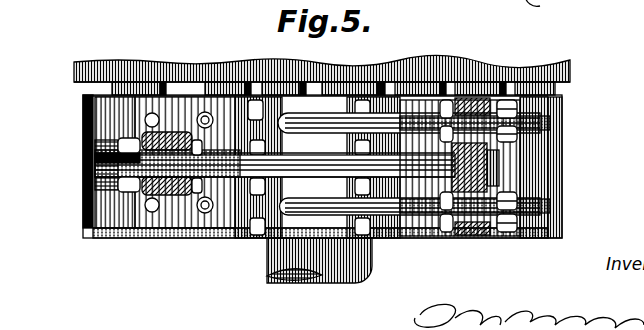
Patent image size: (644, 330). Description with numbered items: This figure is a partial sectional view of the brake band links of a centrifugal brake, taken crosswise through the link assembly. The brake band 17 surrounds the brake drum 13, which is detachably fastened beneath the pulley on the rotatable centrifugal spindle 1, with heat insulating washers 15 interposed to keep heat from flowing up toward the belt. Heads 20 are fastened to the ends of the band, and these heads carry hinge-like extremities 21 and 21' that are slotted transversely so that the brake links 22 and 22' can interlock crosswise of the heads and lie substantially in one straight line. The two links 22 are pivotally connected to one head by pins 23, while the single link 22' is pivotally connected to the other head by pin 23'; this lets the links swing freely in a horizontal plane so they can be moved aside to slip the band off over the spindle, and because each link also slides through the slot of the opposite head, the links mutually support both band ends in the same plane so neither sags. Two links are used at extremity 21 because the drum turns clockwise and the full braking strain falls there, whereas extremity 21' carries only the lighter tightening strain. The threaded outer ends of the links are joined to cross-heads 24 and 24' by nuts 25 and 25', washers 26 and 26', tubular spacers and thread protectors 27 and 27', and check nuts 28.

The centrifugal spindle 1 is at (305, 268).
The brake drum 13 is at (320, 240).
The heat insulating washers 15 is at (133, 92).
The brake band 17 is at (84, 137).
The heads 20 is at (180, 110).
The hinge-like extremity 21 is at (239, 162).
The hinge-like extremity 21' is at (373, 139).
The brake links 22 is at (499, 191).
The brake link 22' is at (275, 235).
The pins 23 is at (393, 163).
The pin 23' is at (415, 121).
The cross-head 24 is at (530, 167).
The cross-head 24' is at (163, 202).
The nuts 25 is at (538, 150).
The nut 25' is at (90, 172).
The washers 26 is at (497, 150).
The washer 26' is at (116, 205).
The tubular spacers and thread protectors 27 is at (469, 165).
The tubular spacer and thread protector 27' is at (177, 216).
The check nuts 28 is at (447, 120).